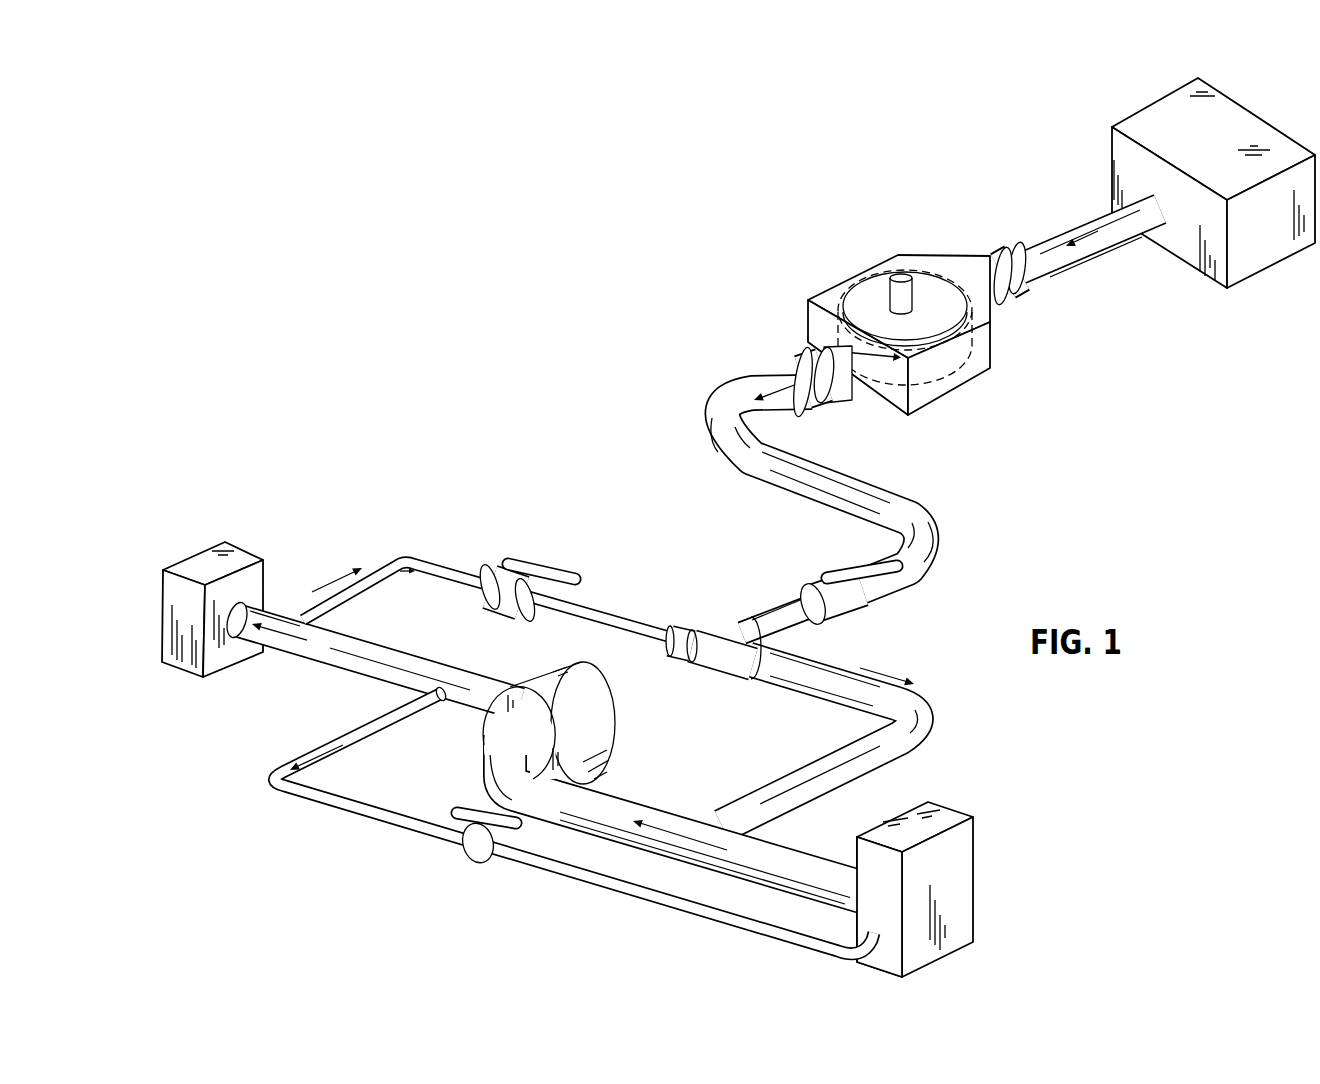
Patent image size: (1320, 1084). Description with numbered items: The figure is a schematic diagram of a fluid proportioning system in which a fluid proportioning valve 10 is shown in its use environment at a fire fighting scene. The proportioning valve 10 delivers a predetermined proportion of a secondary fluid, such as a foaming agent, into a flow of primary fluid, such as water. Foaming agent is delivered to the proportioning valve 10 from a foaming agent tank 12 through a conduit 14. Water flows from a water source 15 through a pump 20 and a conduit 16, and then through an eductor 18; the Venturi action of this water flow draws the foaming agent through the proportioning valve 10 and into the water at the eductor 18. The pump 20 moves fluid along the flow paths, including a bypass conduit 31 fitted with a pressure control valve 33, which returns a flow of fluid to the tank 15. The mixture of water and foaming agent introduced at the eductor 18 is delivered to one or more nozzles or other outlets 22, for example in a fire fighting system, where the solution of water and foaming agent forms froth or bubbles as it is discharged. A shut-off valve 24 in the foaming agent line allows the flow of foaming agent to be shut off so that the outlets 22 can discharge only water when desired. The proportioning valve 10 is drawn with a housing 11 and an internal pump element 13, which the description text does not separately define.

The fluid proportioning valve 10 is at (960, 307).
The pump housing 11 is at (992, 369).
The foaming agent tank 12 is at (1192, 242).
The pump 13 is at (822, 306).
The conduit 14 is at (1080, 262).
The water source 15 is at (942, 818).
The conduit 16 is at (410, 556).
The eductor 18 is at (727, 663).
The pump 20 is at (594, 720).
The outlets 22 is at (242, 585).
The shut-off valve 24 is at (845, 616).
The bypass conduit 31 is at (363, 803).
The pressure control valve 33 is at (453, 848).